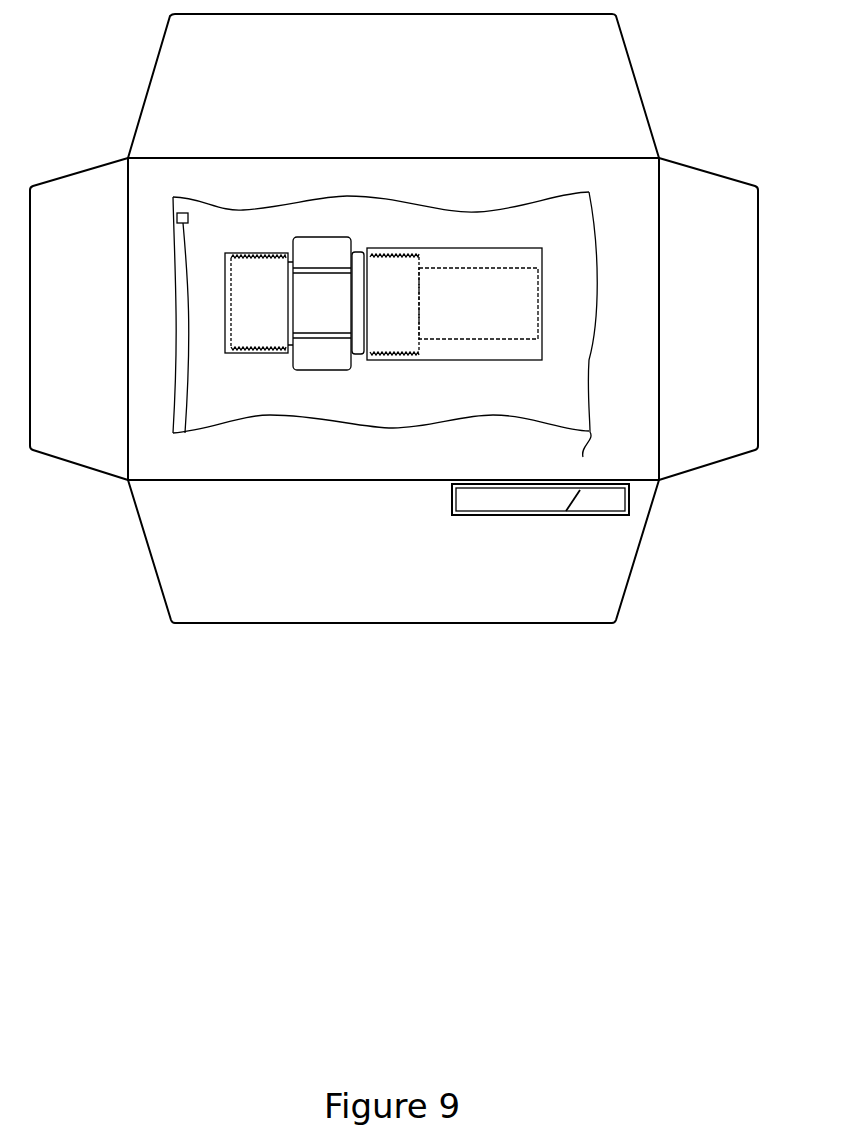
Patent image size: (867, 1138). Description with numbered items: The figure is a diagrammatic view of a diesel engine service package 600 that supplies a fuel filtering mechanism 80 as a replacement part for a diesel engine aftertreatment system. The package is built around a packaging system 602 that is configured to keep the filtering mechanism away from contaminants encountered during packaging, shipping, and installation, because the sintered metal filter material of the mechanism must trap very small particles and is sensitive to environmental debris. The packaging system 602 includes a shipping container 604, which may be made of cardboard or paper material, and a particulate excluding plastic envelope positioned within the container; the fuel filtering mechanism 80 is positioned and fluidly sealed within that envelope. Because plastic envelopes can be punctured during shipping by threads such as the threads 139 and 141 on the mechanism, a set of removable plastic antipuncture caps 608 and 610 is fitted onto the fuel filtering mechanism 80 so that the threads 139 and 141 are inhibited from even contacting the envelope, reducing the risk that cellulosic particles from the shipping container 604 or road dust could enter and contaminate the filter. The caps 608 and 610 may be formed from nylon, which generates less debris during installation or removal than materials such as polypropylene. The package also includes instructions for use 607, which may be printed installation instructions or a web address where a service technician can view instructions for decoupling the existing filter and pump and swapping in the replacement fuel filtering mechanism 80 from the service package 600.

The diesel engine service package 600 is at (756, 132).
The packaging system 602 is at (768, 333).
The shipping container 604 is at (685, 473).
The instructions for use 607 is at (513, 516).
The removable plastic antipuncture cap 608 is at (432, 361).
The removable plastic antipuncture cap 610 is at (232, 354).
The fuel filtering mechanism 80 is at (312, 237).
The threads 139 is at (388, 256).
The threads 141 is at (281, 350).